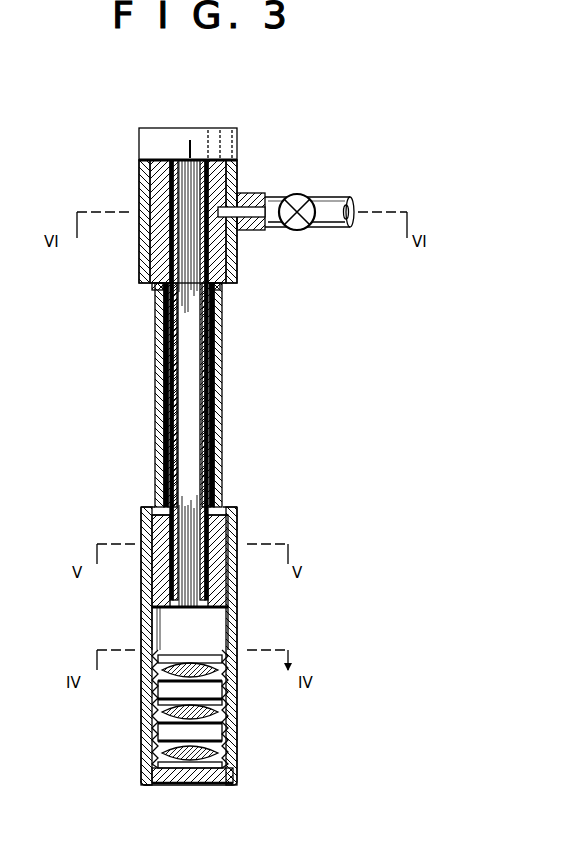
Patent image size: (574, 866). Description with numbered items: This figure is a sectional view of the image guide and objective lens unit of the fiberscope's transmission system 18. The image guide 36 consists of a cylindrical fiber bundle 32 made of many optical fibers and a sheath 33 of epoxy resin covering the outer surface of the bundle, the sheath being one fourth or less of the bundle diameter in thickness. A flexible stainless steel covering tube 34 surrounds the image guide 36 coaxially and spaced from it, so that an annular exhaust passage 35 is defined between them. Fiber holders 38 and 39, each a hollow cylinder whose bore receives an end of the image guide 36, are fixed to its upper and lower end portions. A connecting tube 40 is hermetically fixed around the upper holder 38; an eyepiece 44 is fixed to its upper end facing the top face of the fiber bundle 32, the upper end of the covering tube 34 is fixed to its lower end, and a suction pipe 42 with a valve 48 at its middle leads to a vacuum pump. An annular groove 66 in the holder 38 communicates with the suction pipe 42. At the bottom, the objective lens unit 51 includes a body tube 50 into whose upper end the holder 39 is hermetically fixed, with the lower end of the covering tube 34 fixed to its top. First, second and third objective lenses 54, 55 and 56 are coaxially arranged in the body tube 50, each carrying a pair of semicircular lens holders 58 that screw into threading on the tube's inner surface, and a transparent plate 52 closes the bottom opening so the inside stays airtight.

The transmission system 18 is at (325, 143).
The eyepiece 44 is at (180, 127).
The connecting tube 40 is at (237, 170).
The fiber holder 38 is at (140, 248).
The annular groove 66 is at (238, 226).
The suction pipe 42 is at (331, 198).
The valve 48 is at (297, 194).
The image guide 36 is at (249, 407).
The covering tube 34 is at (224, 350).
The sheath 33 is at (213, 450).
The exhaust passage 35 is at (166, 450).
The fiber bundle 32 is at (183, 393).
The body tube 50 is at (142, 713).
The fiber holder 39 is at (157, 580).
The first objective lens 54 is at (196, 665).
The lens holders 58 is at (226, 675).
The second objective lens 55 is at (178, 722).
The third objective lens 56 is at (235, 758).
The transparent plate 52 is at (187, 784).
The objective lens unit 51 is at (133, 777).